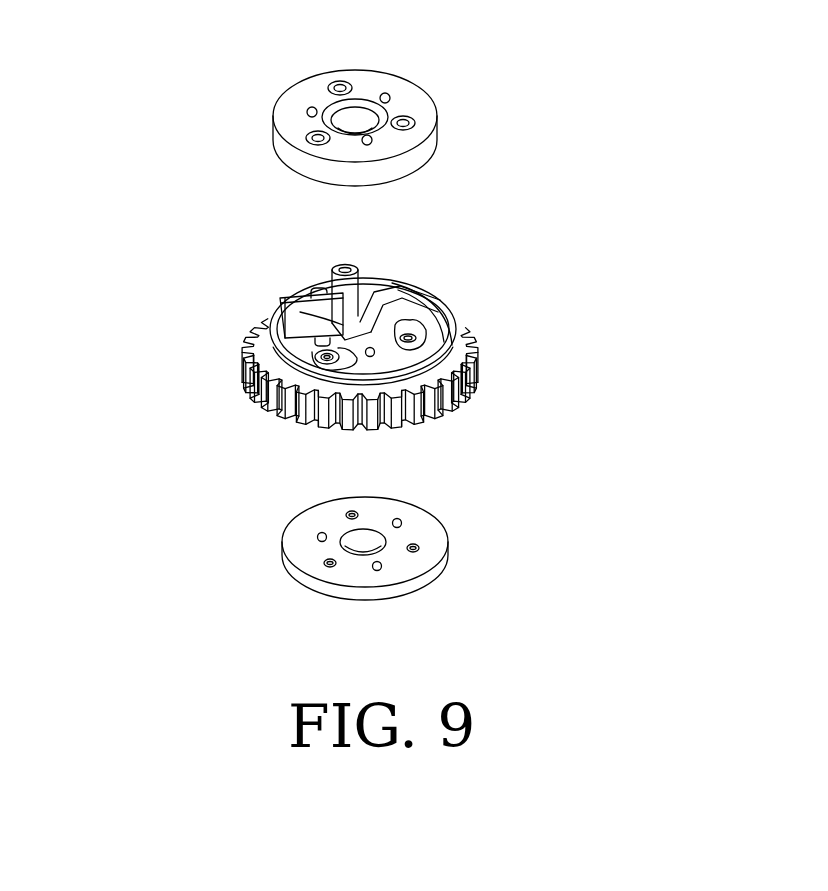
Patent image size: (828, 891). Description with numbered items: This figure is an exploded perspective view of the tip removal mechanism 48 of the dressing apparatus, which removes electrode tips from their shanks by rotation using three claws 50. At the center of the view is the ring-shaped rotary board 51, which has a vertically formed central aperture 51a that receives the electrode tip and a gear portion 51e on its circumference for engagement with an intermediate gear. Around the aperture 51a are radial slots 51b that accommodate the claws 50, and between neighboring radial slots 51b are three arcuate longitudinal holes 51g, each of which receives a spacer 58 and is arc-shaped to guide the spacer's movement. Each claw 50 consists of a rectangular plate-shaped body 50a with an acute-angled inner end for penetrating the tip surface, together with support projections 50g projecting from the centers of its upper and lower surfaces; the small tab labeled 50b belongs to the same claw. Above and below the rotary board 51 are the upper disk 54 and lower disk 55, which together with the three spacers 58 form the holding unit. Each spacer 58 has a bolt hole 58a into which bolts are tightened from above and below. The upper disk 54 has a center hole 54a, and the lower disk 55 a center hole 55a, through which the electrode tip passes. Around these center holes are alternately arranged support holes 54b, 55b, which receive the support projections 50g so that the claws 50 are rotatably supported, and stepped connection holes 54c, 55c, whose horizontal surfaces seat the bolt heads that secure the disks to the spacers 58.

The tip removal mechanism 48 is at (155, 235).
The claw 50 is at (299, 340).
The claw body 50a is at (303, 310).
The lower tab of block 50b is at (318, 340).
The support projection 50g is at (317, 290).
The rotary board 51 is at (397, 365).
The aperture 51a is at (252, 372).
The radial slot 51b is at (387, 297).
The gear portion 51e is at (477, 372).
The arcuate longitudinal hole 51g is at (413, 320).
The upper disk 54 is at (458, 107).
The center hole 54a is at (355, 115).
The support hole 54b is at (387, 98).
The connection hole 54c is at (330, 83).
The lower disk 55 is at (467, 532).
The center hole 55a is at (363, 550).
The support hole 55b is at (398, 523).
The connection hole 55c is at (354, 513).
The spacer 58 is at (362, 290).
The bolt hole 58a is at (340, 267).